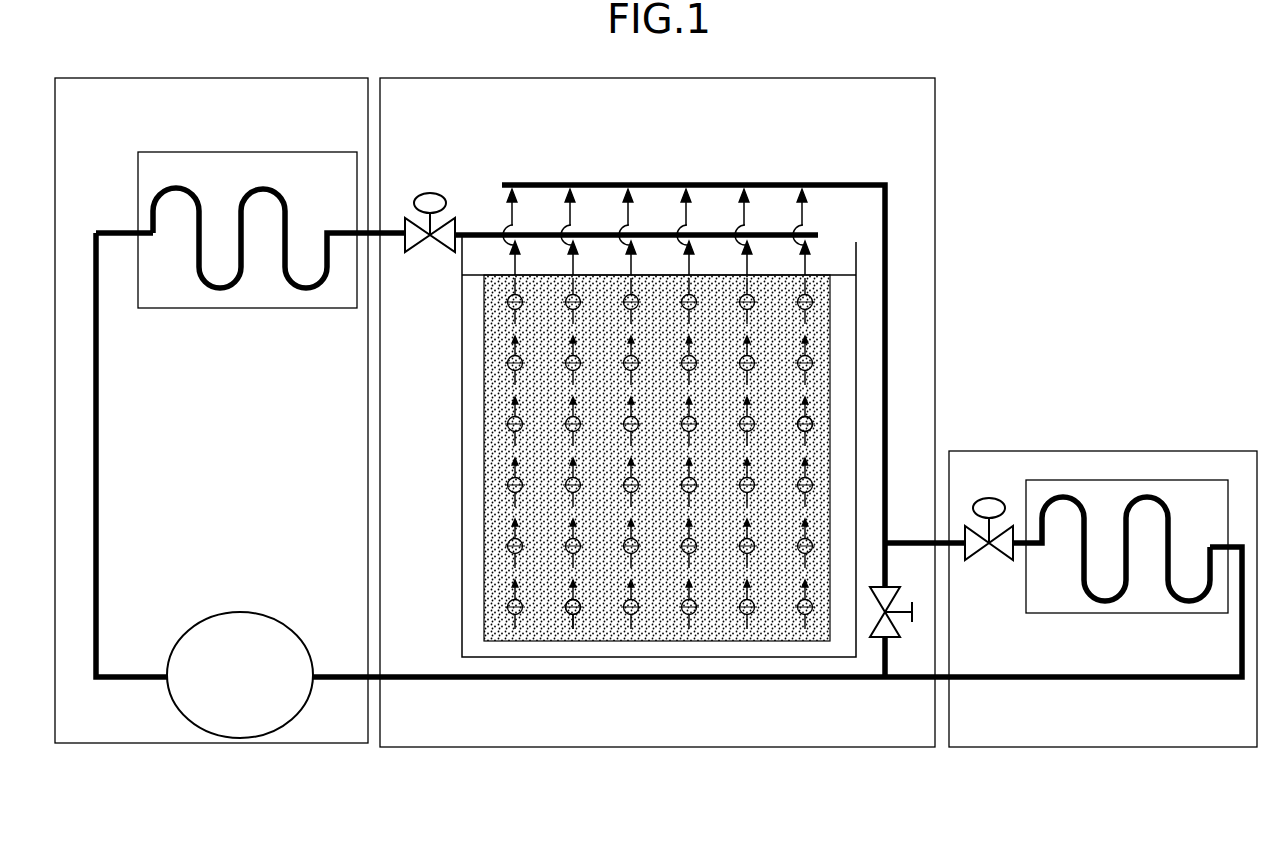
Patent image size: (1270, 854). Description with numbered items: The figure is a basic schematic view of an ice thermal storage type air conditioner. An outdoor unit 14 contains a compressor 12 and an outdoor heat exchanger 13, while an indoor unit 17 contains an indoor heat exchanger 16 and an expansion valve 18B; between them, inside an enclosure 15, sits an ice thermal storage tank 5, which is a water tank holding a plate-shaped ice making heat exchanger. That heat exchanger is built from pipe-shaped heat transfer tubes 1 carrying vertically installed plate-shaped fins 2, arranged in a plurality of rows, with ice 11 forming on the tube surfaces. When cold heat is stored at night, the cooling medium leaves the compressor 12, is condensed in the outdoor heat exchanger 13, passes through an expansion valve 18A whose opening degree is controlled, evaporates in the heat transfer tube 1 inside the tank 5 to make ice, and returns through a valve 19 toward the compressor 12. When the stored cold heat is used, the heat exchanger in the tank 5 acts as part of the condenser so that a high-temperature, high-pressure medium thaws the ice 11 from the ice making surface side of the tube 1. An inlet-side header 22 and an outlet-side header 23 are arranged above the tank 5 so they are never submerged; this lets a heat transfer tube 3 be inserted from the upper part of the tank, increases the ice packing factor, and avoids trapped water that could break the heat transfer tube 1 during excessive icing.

The heat transfer tube 1 is at (578, 615).
The fin 2 is at (572, 628).
The heat transfer tube 3 is at (813, 423).
The ice thermal storage tank 5 is at (461, 545).
The ice 11 is at (833, 347).
The compressor 12 is at (168, 698).
The outdoor heat exchanger 13 is at (200, 152).
The outdoor unit 14 is at (325, 743).
The treatment unit 15 is at (780, 748).
The indoor heat exchanger 16 is at (1118, 480).
The indoor unit 17 is at (1117, 747).
The expansion valve 18A is at (430, 193).
The expansion valve 18B is at (1000, 556).
The valve 19 is at (893, 641).
The inlet-side header 22 is at (477, 237).
The outlet-side header 23 is at (772, 186).